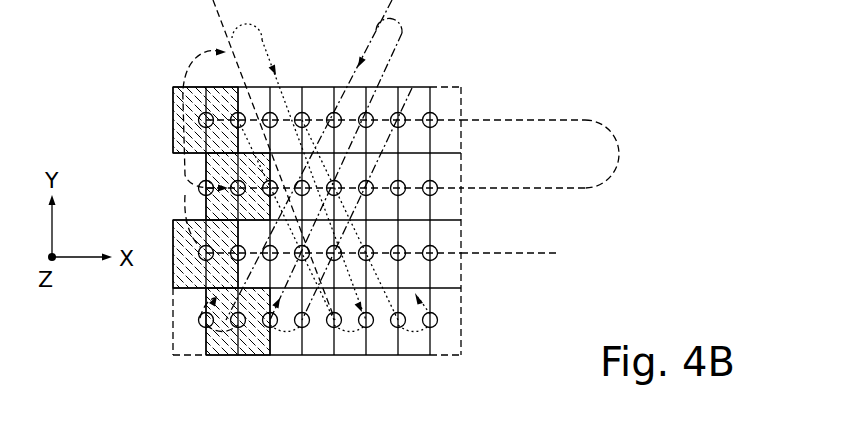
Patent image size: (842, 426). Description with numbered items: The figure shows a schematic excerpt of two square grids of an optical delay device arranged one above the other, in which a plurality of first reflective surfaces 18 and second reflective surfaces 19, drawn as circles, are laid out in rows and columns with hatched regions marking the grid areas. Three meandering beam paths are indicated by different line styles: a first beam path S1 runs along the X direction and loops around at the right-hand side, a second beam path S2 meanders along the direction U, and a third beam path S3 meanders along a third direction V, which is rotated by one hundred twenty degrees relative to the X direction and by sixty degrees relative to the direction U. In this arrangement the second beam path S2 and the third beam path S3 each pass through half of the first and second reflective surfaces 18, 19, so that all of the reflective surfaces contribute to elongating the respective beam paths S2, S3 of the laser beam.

The first reflective surfaces 18 is at (145, 187).
The second reflective surfaces 19 is at (151, 140).
The first beam path S1 is at (530, 118).
The second beam path S2 is at (396, 63).
The third beam path S3 is at (265, 40).
The direction of the second beam path U is at (392, 3).
The third direction V is at (220, 20).